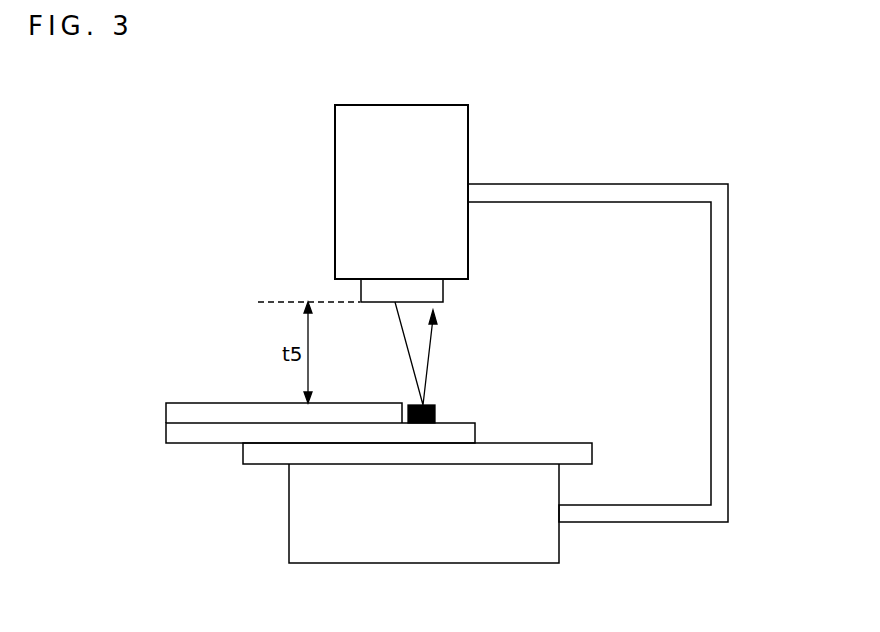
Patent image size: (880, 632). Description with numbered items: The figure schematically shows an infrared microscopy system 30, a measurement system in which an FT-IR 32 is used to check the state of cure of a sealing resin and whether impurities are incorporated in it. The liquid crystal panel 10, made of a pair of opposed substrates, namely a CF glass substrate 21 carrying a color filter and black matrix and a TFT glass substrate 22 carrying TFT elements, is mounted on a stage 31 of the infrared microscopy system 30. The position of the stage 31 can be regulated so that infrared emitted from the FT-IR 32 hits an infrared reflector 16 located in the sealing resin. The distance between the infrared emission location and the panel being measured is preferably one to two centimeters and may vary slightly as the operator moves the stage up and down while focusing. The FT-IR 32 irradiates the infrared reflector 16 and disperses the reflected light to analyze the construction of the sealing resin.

The liquid crystal panel 10 is at (113, 398).
The CF glass substrate 21 is at (166, 413).
The TFT glass substrate 22 is at (166, 437).
The infrared reflector 16 is at (437, 416).
The infrared microscopy system 30 is at (523, 250).
The stage 31 is at (510, 450).
The FT-IR 32 is at (468, 265).